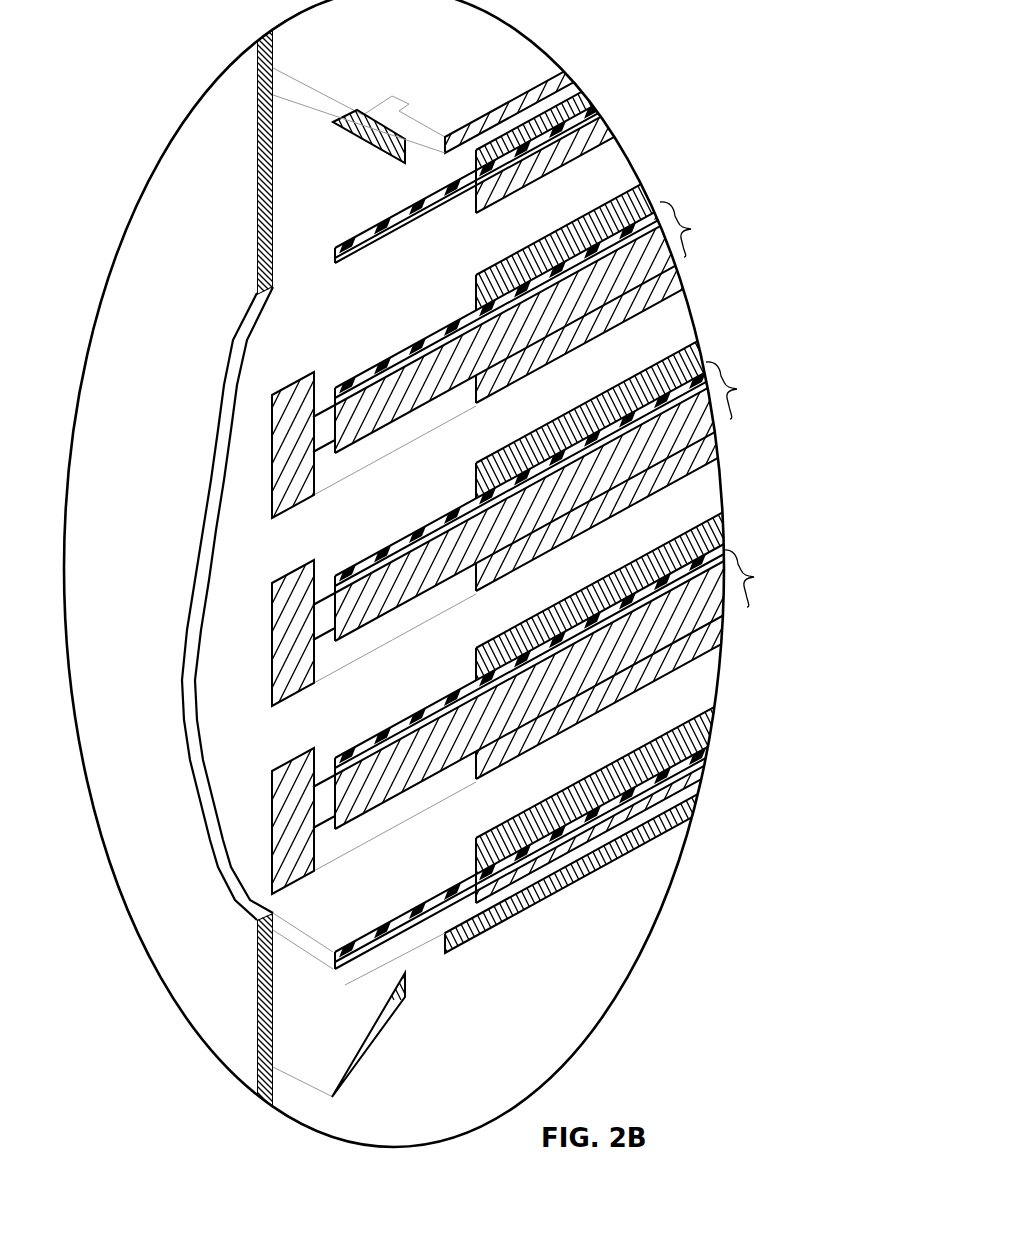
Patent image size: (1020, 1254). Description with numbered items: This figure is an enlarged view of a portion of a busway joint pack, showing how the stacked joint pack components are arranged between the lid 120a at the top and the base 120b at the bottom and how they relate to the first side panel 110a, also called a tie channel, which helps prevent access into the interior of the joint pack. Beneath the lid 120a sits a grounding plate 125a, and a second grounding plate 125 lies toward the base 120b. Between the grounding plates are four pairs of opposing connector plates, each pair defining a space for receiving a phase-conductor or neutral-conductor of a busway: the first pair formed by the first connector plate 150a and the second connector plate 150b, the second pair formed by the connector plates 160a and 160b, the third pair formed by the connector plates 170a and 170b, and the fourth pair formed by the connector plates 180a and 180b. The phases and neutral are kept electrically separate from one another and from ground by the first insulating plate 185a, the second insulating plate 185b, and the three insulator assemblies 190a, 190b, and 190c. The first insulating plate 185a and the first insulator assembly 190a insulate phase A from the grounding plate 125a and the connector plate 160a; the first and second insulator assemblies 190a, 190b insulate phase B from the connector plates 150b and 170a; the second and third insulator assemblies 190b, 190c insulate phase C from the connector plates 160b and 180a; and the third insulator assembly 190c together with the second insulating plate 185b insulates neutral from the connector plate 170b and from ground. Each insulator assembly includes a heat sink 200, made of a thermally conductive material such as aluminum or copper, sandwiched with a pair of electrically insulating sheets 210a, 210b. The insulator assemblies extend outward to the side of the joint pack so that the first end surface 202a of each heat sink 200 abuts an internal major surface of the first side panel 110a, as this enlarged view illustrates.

The first side panel 110a is at (218, 113).
The lid 120a is at (527, 57).
The grounding plate 125a is at (580, 98).
The first connector plate 150a is at (600, 130).
The second connector plate 150b is at (640, 187).
The first insulator assembly 190a is at (691, 229).
The first connector plate 160a is at (660, 274).
The second connector plate 160b is at (700, 353).
The second insulator assembly 190b is at (737, 389).
The first connector plate 170a is at (715, 438).
The second connector plate 170b is at (718, 527).
The third insulator assembly 190c is at (754, 577).
The first connector plate 180a is at (720, 625).
The second connector plate 180b is at (700, 720).
The grounding plate 125 is at (700, 768).
The base 120b is at (480, 935).
The first insulating plate 185a is at (367, 236).
The second insulating plate 185b is at (400, 942).
The electrically insulating sheet 210a is at (367, 372).
The first end surface 202a is at (240, 424).
The electrically insulating sheet 210b is at (366, 436).
The heat sink 200 is at (252, 498).